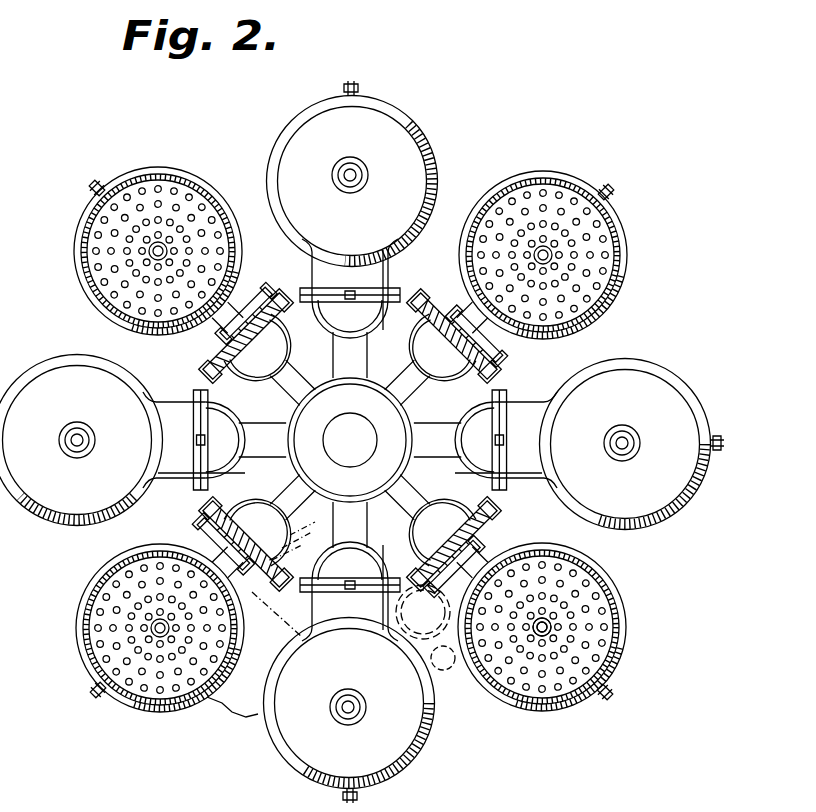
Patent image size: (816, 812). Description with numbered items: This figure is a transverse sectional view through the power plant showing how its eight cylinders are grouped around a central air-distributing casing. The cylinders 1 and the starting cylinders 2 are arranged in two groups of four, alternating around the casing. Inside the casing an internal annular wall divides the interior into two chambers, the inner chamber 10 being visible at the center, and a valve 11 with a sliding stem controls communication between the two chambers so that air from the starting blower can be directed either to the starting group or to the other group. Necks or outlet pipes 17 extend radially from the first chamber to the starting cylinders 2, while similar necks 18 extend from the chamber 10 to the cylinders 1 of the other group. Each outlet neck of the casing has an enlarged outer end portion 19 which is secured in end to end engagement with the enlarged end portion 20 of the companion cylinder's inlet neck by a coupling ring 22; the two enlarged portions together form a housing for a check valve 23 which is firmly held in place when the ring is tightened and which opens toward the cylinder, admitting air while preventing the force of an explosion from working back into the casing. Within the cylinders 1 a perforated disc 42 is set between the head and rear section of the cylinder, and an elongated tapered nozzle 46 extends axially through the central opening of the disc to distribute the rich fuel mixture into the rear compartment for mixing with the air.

The cylinders 1 is at (80, 231).
The starting cylinders 2 is at (423, 140).
The chamber 10 is at (396, 428).
The valve 11 is at (371, 461).
The necks or outlet pipes 17 is at (340, 348).
The necks or pipes 18 is at (413, 367).
The enlarged outer end portion 19 is at (477, 418).
The enlarged end portion of inlet neck 20 is at (391, 275).
The coupling ring 22 is at (300, 291).
The check valve 23 is at (492, 362).
The perforated disc 42 is at (596, 618).
The elongated nozzle 46 is at (552, 622).